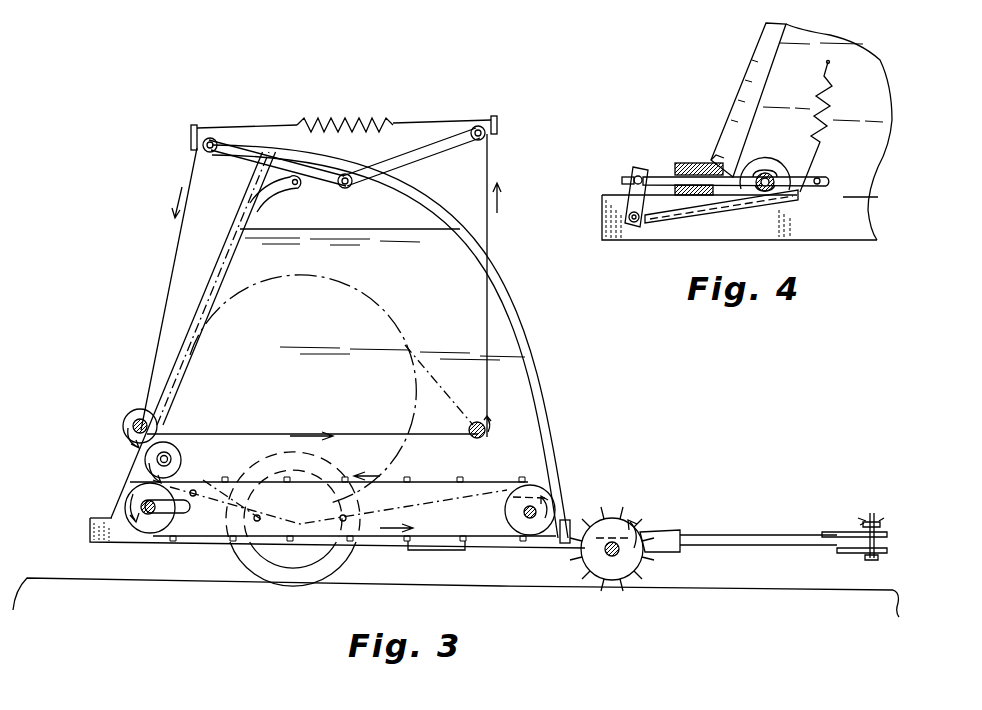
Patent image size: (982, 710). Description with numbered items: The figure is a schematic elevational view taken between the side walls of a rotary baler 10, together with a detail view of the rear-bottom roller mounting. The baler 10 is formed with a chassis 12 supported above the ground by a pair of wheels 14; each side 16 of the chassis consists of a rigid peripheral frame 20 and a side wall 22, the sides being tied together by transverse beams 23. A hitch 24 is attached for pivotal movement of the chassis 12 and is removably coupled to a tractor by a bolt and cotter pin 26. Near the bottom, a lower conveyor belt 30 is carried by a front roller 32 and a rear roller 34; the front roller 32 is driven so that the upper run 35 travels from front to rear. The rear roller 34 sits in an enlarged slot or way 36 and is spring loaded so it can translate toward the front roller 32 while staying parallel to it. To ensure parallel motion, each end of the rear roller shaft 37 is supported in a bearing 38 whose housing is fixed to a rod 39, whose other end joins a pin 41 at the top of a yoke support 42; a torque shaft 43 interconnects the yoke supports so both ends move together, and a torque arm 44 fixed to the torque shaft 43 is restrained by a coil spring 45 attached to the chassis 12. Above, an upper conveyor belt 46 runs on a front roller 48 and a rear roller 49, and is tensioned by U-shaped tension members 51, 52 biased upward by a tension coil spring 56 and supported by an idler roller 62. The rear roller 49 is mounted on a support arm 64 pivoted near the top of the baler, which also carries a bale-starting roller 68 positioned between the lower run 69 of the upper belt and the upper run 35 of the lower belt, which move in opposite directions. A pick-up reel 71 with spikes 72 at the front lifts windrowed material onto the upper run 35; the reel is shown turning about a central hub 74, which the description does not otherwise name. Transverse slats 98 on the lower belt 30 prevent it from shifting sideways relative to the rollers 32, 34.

In FIG. 3, the rotary baler 10 is at (131, 198).
In FIG. 3, the chassis 12 is at (216, 275).
In FIG. 3, the wheels 14 is at (242, 572).
In FIG. 3, the side 16 is at (500, 318).
In FIG. 3, the peripheral frame 20 is at (508, 275).
In FIG. 3, the side wall 22 is at (463, 253).
In FIG. 3, the transverse structural members or beams 23 is at (683, 528).
In FIG. 3, the hitch 24 is at (742, 548).
In FIG. 3, the bolt and cotter pin 26 is at (873, 513).
In FIG. 3, the lower conveyor belt 30 is at (491, 476).
In FIG. 3, the front roller 32 is at (544, 491).
In FIG. 3, the rear roller 34 is at (130, 488).
In FIG. 3, the upper run 35 is at (445, 483).
In FIG. 3, the slot or way 36 is at (180, 513).
In FIG. 4, the slot or way 36 is at (823, 176).
In FIG. 3, the rear roller shaft 37 is at (148, 514).
In FIG. 4, the rear roller shaft 37 is at (767, 172).
In FIG. 4, the bearing 38 is at (760, 173).
In FIG. 4, the rod 39 is at (672, 133).
In FIG. 4, the pin 41 is at (632, 173).
In FIG. 4, the yoke support 42 is at (632, 188).
In FIG. 4, the torque shaft 43 is at (641, 218).
In FIG. 4, the torque arm 44 is at (723, 213).
In FIG. 4, the coil spring 45 is at (822, 110).
In FIG. 3, the upper conveyor belt 46 is at (153, 338).
In FIG. 3, the front roller 48 is at (480, 418).
In FIG. 3, the rear roller 49 is at (137, 407).
In FIG. 3, the tension member 51 is at (390, 156).
In FIG. 3, the tension member 52 is at (280, 154).
In FIG. 3, the tension coil spring 56 is at (362, 118).
In FIG. 3, the idler roller 62 is at (347, 188).
In FIG. 3, the support arm 64 is at (196, 316).
In FIG. 3, the bale-starting roller 68 is at (144, 450).
In FIG. 3, the lower run 69 is at (198, 436).
In FIG. 3, the pick-up reel 71 is at (617, 512).
In FIG. 3, the spikes 72 is at (645, 556).
In FIG. 3, the wheel hub 74 is at (617, 552).
In FIG. 3, the transverse slats 98 is at (432, 550).